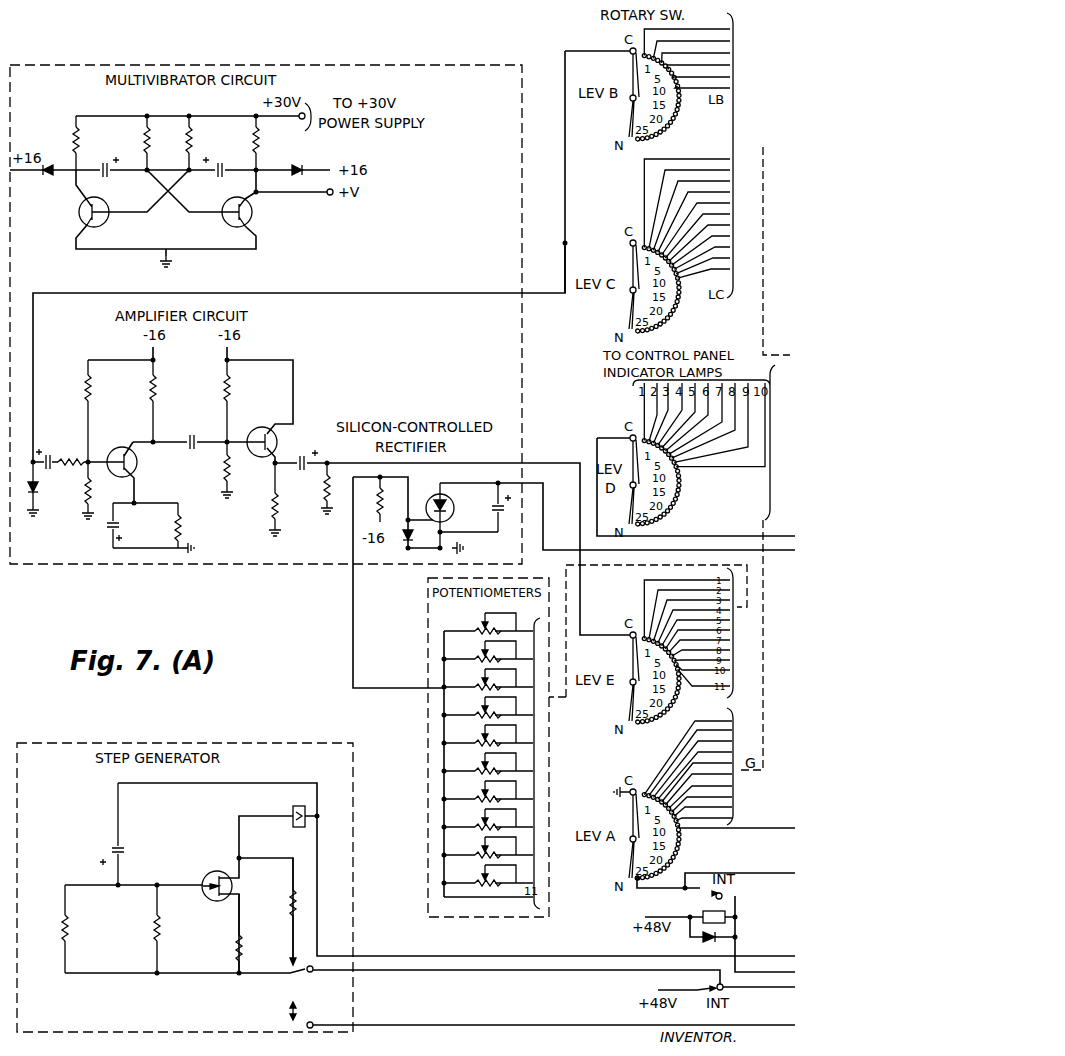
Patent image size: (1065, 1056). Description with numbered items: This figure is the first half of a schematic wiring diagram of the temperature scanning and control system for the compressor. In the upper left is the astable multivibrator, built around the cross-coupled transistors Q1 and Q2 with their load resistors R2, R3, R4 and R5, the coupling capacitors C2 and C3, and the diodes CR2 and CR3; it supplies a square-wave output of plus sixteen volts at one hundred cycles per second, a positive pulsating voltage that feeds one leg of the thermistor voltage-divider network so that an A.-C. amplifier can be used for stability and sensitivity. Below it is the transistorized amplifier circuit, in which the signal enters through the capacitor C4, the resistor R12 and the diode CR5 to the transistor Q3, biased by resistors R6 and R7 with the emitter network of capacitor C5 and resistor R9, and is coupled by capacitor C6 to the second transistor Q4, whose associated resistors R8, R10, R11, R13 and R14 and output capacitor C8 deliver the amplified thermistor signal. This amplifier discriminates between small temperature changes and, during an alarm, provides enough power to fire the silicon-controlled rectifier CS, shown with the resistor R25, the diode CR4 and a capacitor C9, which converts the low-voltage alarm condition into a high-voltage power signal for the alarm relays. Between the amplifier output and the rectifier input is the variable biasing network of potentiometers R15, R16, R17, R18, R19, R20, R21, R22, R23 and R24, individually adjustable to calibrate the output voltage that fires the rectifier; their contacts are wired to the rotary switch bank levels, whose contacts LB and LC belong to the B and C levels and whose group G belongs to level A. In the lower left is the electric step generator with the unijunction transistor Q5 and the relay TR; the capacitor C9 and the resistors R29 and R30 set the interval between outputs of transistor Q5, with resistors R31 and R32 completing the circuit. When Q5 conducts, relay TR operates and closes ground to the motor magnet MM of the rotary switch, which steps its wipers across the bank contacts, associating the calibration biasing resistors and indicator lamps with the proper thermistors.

The resistor R2 is at (88, 143).
The resistor R4 is at (159, 143).
The resistor R5 is at (201, 143).
The resistor R3 is at (268, 143).
The diode CR2 is at (43, 179).
The diode CR3 is at (302, 160).
The capacitor C2 is at (115, 175).
The capacitor C3 is at (205, 175).
The transistor Q1 is at (105, 214).
The transistor Q2 is at (250, 212).
The resistor R6 is at (100, 411).
The resistor R8 is at (165, 401).
The resistor R10 is at (243, 401).
The capacitor C4 is at (50, 451).
The resistor R12 is at (69, 472).
The diode CR5 is at (46, 489).
The resistor R7 is at (97, 490).
The transistor Q3 is at (117, 452).
The capacitor C6 is at (189, 433).
The transistor Q4 is at (256, 432).
The resistor R11 is at (212, 470).
The capacitor C5 is at (123, 525).
The resistor R9 is at (192, 525).
The resistor R13 is at (262, 499).
The capacitor C8 is at (302, 451).
The resistor R14 is at (311, 488).
The resistor R25 is at (369, 499).
The silicon-controlled rectifier CS is at (451, 515).
The diode CR4 is at (399, 547).
The capacitor C9 is at (305, 684).
The potentiometer R15 is at (488, 623).
The potentiometer R16 is at (488, 651).
The potentiometer R17 is at (488, 679).
The potentiometer R18 is at (488, 707).
The potentiometer R19 is at (488, 735).
The potentiometer R20 is at (488, 763).
The potentiometer R21 is at (488, 791).
The potentiometer R22 is at (488, 819).
The potentiometer R23 is at (488, 847).
The potentiometer R24 is at (490, 875).
The relay TR is at (293, 806).
The unijunction transistor Q5 is at (211, 877).
The resistor R29 is at (81, 929).
The resistor R30 is at (173, 929).
The resistor R31 is at (255, 933).
The resistor R32 is at (274, 909).
The motor magnet MM is at (714, 917).
The rotary switch level B LB is at (672, 91).
The rotary switch level C LC is at (672, 252).
The rotary switch level A contacts G is at (704, 807).